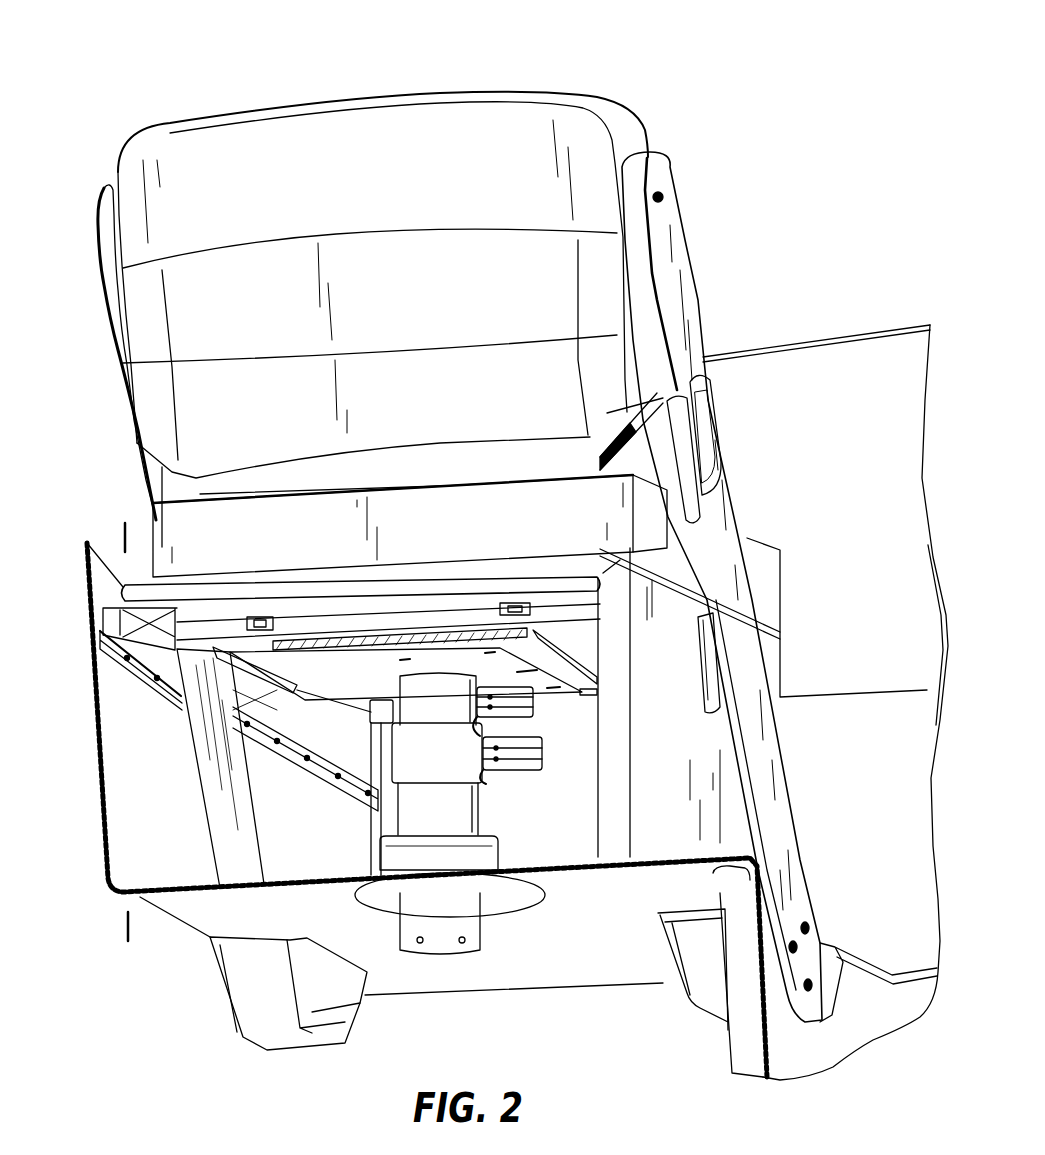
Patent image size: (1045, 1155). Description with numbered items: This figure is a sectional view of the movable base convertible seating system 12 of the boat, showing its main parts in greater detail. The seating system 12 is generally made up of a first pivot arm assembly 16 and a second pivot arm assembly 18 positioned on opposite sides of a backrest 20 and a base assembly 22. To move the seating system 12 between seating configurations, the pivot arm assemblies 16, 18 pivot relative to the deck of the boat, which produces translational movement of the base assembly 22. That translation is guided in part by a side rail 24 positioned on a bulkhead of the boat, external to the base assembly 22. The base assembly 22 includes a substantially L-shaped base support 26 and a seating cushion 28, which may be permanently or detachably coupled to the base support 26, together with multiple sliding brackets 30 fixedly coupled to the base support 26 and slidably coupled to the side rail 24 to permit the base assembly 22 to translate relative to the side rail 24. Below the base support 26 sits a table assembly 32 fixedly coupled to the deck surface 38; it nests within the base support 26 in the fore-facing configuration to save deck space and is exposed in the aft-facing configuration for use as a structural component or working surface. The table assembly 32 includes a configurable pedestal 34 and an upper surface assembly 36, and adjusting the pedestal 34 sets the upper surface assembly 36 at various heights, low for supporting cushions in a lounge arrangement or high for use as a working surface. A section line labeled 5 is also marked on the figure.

The section line 5- 5 is at (121, 532).
The movable base convertible seating system 12 is at (800, 134).
The first pivot arm assembly 16 is at (713, 324).
The second pivot arm assembly 18 is at (93, 340).
The backrest 20 is at (237, 117).
The base assembly 22 is at (796, 676).
The side rail 24 is at (148, 682).
The base support 26 is at (687, 753).
The seating cushion 28 is at (567, 517).
The sliding brackets 30 is at (135, 628).
The table assembly 32 is at (560, 748).
The configurable pedestal 34 is at (324, 722).
The upper surface assembly 36 is at (360, 822).
The deck surface 38 is at (567, 862).